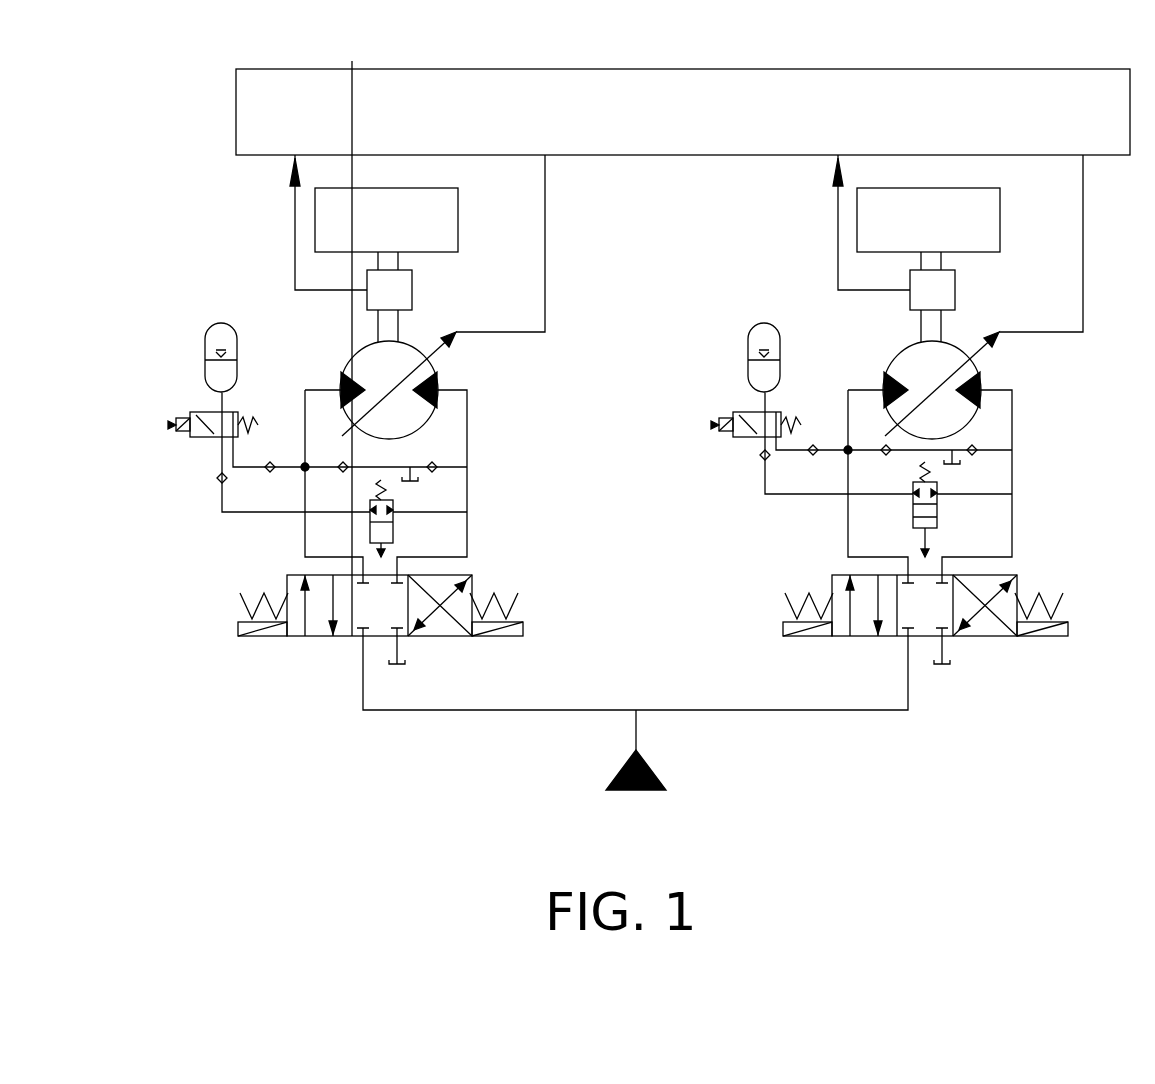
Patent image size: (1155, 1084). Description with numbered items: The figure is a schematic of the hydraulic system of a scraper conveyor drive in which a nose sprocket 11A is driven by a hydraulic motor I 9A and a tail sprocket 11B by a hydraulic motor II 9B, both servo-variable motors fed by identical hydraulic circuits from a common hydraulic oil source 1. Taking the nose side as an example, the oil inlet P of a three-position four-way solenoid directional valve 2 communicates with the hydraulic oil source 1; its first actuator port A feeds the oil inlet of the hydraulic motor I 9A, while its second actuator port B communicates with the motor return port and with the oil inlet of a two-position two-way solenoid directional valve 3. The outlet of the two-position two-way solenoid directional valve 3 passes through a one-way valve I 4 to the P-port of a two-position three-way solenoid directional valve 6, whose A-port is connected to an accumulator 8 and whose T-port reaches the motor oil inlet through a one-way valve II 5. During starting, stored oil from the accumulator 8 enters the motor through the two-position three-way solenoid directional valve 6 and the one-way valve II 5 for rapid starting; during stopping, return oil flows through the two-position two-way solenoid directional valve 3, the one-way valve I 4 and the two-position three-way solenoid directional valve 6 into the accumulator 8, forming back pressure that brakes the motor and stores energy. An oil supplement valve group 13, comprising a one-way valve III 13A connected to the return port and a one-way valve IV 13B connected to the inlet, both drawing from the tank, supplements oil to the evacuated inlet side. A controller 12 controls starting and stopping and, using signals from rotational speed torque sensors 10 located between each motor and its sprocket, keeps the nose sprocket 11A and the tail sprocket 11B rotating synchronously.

The hydraulic oil source 1 is at (635, 718).
The three-position four-way solenoid directional valve 2 is at (354, 367).
The two-position two-way solenoid directional valve 3 is at (386, 520).
The one-way valve I 4 is at (332, 479).
The one-way valve II 5 is at (275, 491).
The two-position three-way solenoid directional valve 6 is at (181, 428).
The accumulator 8 is at (206, 365).
The hydraulic motor I 9A is at (432, 387).
The hydraulic motor II 9B is at (979, 387).
The rotational speed torque sensor 10 is at (419, 297).
The nose sprocket 11A is at (430, 220).
The tail sprocket 11B is at (969, 220).
The controller 12 is at (683, 112).
The oil supplement valve group 13 is at (381, 464).
The one-way valve III 13A is at (436, 471).
The one-way valve IV 13B is at (348, 465).